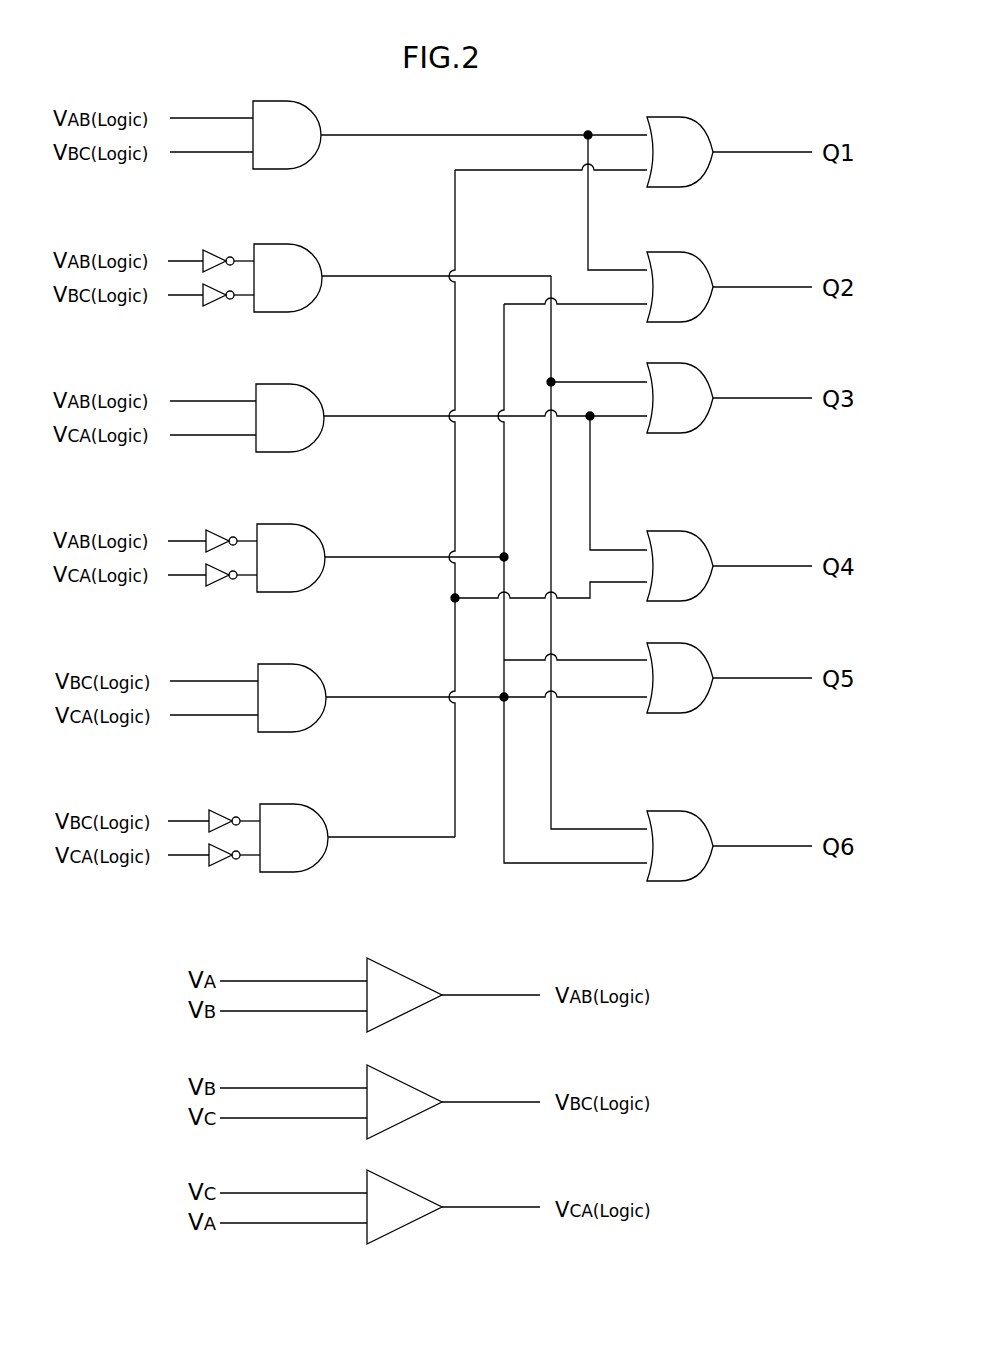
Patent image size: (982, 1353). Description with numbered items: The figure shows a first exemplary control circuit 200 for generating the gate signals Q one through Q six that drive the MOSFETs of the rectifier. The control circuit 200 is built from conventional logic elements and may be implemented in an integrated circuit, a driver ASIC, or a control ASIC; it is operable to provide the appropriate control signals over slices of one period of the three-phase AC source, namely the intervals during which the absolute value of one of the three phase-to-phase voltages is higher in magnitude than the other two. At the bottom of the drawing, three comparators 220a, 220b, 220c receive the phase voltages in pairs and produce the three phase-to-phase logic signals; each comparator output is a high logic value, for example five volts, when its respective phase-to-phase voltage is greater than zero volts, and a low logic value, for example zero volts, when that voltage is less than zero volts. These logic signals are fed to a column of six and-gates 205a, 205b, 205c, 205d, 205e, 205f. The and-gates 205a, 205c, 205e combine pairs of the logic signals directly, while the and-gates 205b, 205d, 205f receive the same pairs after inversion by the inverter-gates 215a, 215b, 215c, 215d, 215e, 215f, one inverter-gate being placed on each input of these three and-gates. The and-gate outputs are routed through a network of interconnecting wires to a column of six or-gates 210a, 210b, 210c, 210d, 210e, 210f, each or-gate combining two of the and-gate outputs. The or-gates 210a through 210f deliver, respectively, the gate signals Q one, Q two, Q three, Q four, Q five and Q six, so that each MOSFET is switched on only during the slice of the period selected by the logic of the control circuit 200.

The control circuit 200 is at (178, 77).
The and-gate 205a is at (245, 135).
The and-gate 205b is at (245, 278).
The and-gate 205c is at (247, 418).
The and-gate 205d is at (246, 558).
The and-gate 205e is at (248, 698).
The and-gate 205f is at (248, 838).
The or-gate 210a is at (729, 152).
The or-gate 210b is at (729, 287).
The or-gate 210c is at (729, 398).
The or-gate 210d is at (729, 566).
The or-gate 210e is at (729, 678).
The or-gate 210f is at (729, 846).
The inverter-gate 215a is at (229, 257).
The inverter-gate 215b is at (229, 299).
The inverter-gate 215c is at (232, 537).
The inverter-gate 215d is at (232, 579).
The inverter-gate 215e is at (235, 817).
The inverter-gate 215f is at (235, 859).
The comparator 220a is at (414, 991).
The comparator 220b is at (414, 1098).
The comparator 220c is at (414, 1203).